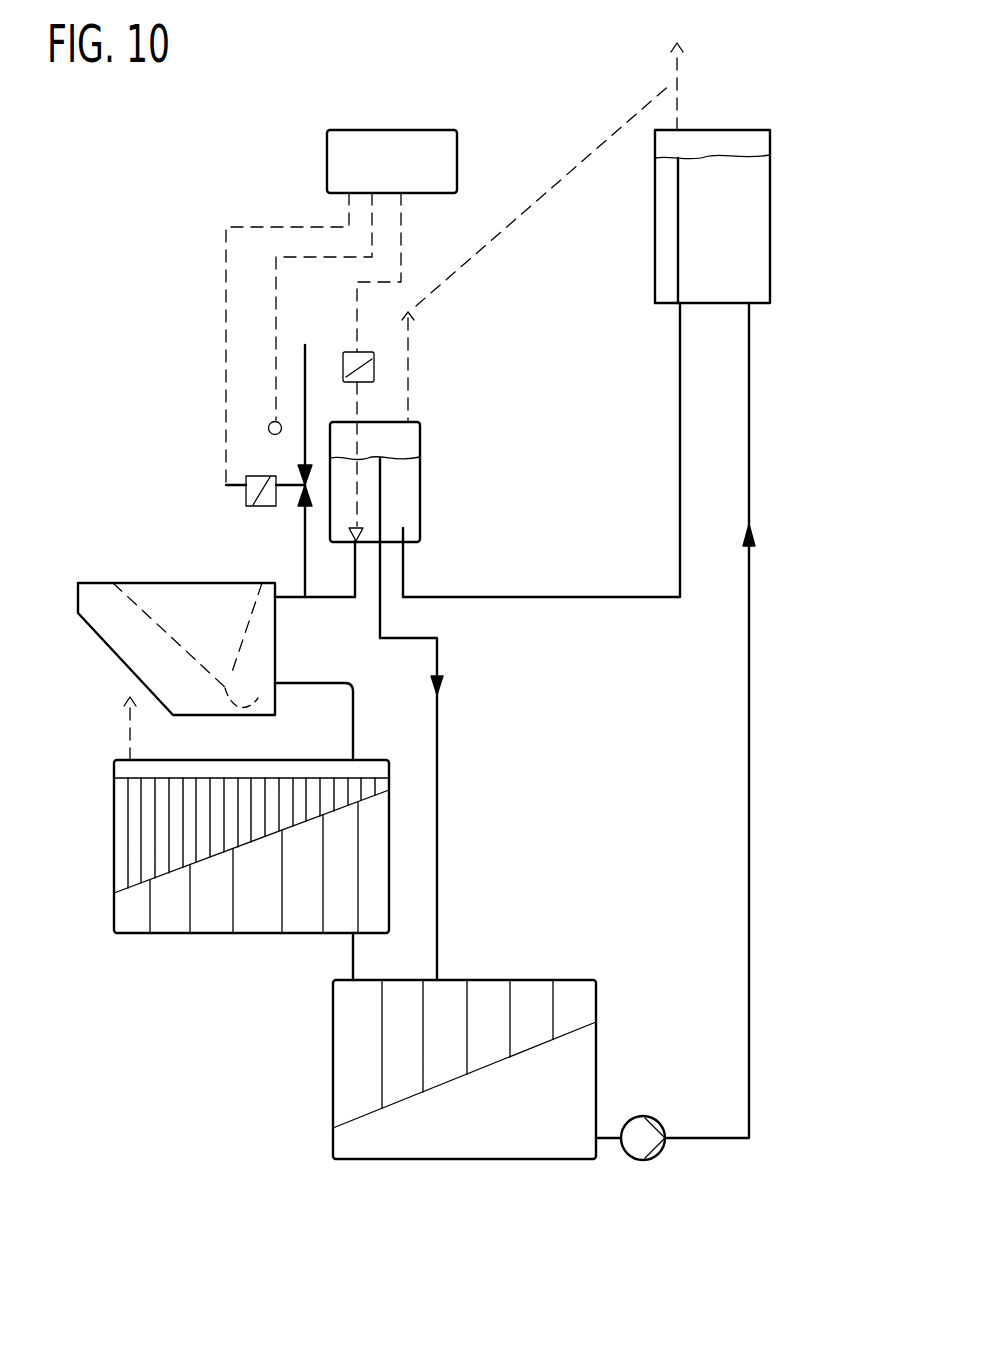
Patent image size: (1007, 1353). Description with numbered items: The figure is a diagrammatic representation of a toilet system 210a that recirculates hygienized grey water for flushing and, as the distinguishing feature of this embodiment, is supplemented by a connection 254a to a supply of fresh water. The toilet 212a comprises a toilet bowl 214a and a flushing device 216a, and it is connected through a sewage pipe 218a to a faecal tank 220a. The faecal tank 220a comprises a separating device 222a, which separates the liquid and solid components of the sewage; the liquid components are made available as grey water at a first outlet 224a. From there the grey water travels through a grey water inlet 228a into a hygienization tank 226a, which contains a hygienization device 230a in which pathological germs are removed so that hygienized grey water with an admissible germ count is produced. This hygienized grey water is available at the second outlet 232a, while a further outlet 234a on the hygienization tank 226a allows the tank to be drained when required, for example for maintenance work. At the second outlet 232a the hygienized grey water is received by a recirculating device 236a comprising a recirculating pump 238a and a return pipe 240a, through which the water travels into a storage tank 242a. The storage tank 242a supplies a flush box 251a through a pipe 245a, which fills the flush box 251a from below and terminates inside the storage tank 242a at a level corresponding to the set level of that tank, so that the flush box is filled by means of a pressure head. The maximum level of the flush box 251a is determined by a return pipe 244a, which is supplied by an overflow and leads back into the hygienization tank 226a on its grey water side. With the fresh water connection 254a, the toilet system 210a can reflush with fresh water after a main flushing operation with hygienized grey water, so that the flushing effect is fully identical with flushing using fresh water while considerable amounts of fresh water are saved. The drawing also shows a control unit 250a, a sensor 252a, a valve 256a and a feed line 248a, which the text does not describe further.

The toilet system 210a is at (163, 1056).
The toilet 212a is at (128, 546).
The toilet bowl 214a is at (92, 583).
The flushing device 216a is at (198, 418).
The sewage pipe 218a is at (355, 697).
The faecal tank 220a is at (114, 822).
The separating device 222a is at (160, 880).
The first outlet 224a is at (360, 935).
The hygienization tank 226a is at (333, 1108).
The grey water inlet 228a is at (357, 977).
The hygienization device 230a is at (547, 1048).
The second outlet 232a is at (603, 1142).
The further outlet 234a is at (565, 1160).
The recirculating device 236a is at (770, 706).
The recirculating pump 238a is at (660, 1125).
The return pipe 240a is at (752, 930).
The storage tank 242a is at (770, 233).
The return pipe 244a is at (437, 810).
The pipe 245a is at (553, 597).
The feed pipe 248a is at (307, 597).
The controller 250a is at (455, 142).
The flush box 251a is at (420, 490).
The sensor 252a is at (268, 427).
The connection to a supply of fresh water 254a is at (305, 345).
The solenoid valve 256a is at (300, 501).